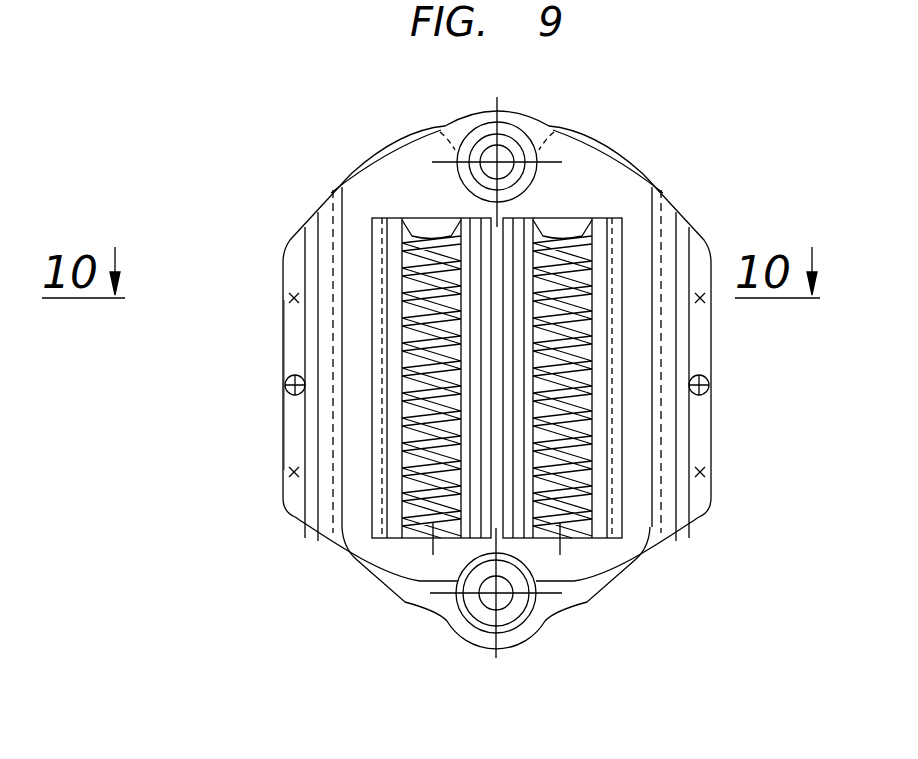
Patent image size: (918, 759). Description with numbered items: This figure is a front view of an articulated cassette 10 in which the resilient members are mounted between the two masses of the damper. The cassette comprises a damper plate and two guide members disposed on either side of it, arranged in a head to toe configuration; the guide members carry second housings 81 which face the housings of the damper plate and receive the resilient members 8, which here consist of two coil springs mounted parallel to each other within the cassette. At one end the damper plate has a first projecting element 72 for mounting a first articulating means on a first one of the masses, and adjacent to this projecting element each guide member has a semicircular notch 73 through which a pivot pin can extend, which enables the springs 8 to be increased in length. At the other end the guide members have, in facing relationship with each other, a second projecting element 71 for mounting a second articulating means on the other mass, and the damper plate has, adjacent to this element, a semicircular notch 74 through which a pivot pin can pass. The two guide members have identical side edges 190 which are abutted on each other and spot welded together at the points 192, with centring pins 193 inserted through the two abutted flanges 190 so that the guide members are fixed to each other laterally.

The resilient member 8 is at (418, 333).
The articulated cassette 10 is at (738, 364).
The second projecting element 71 is at (470, 112).
The first projecting element 72 is at (587, 596).
The notch 73 is at (520, 568).
The notch 74 is at (528, 112).
The second housing 81 is at (388, 260).
The side edge 190 is at (694, 248).
The spot weld point 192 is at (283, 456).
The centring pin 193 is at (285, 386).